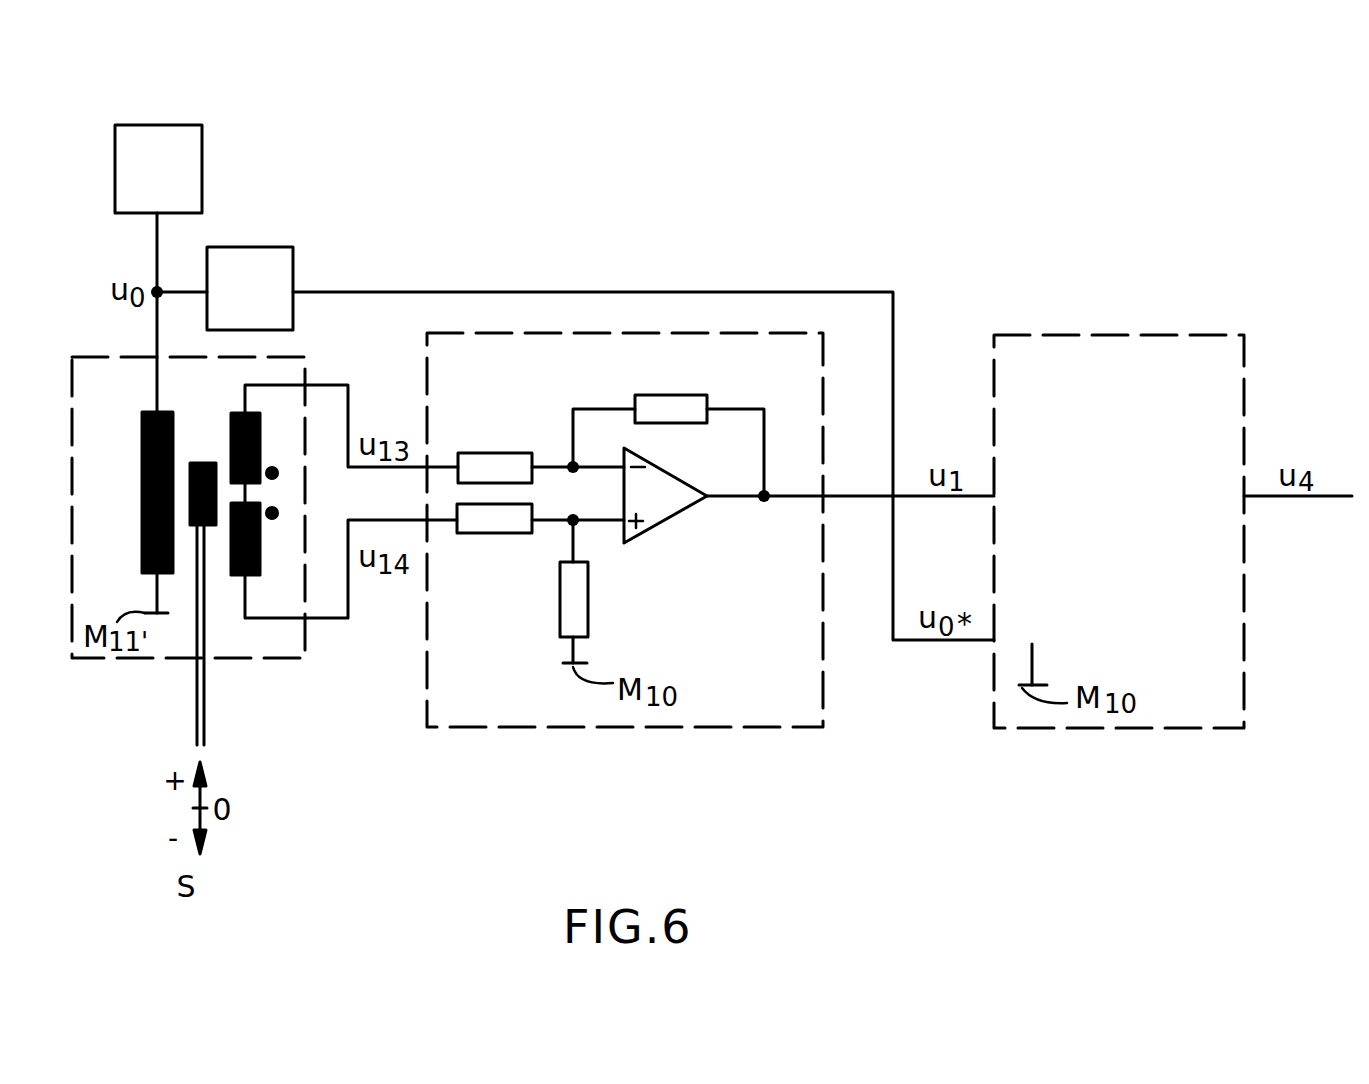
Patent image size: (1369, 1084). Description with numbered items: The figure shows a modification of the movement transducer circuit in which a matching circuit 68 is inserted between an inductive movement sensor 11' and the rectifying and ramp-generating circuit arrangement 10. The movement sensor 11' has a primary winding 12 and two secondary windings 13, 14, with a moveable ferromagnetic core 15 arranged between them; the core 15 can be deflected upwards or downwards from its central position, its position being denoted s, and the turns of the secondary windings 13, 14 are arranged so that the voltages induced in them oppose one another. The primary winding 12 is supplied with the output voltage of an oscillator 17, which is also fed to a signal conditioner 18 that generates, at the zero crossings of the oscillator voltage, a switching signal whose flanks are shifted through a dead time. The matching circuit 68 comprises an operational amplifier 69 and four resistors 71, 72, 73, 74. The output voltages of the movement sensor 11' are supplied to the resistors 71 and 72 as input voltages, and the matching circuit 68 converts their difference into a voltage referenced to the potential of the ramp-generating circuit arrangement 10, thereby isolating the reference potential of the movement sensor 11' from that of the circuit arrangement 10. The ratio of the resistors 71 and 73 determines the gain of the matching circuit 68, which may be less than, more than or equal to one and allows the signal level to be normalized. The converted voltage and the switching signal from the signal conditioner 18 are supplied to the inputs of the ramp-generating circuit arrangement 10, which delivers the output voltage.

The ramp-generating circuit arrangement 10 is at (1115, 728).
The inductive movement sensor 11' is at (204, 561).
The primary winding 12 is at (142, 540).
The secondary winding 13 is at (260, 432).
The secondary winding 14 is at (260, 557).
The moveable ferromagnetic core 15 is at (197, 463).
The oscillator 17 is at (202, 160).
The signal conditioner 18 is at (250, 247).
The matching circuit 68 is at (613, 727).
The operational amplifier 69 is at (672, 520).
The resistor 71 is at (495, 453).
The resistor 72 is at (492, 533).
The resistor 73 is at (687, 393).
The resistor 74 is at (588, 600).